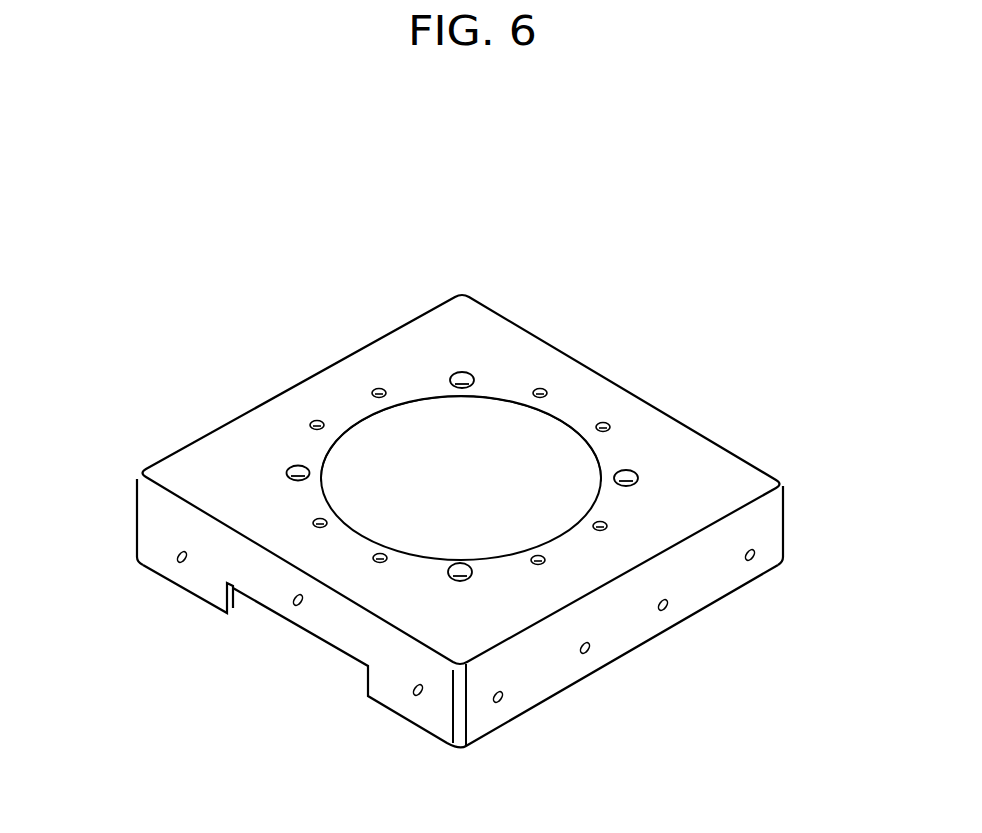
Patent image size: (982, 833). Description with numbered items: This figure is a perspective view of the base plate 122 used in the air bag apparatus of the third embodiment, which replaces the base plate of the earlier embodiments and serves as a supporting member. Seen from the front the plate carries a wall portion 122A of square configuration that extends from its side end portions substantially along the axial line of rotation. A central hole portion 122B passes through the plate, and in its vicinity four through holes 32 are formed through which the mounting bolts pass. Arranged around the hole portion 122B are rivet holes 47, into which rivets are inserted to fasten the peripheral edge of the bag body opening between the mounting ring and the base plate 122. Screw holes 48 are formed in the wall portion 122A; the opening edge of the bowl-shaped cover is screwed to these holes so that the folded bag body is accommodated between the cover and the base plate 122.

The base plate 122 is at (660, 401).
The wall portion 122A is at (152, 536).
The hole portion 122B is at (424, 401).
The rivet holes 47 is at (377, 391).
The through holes 32 is at (641, 472).
The screw holes 48 is at (180, 563).